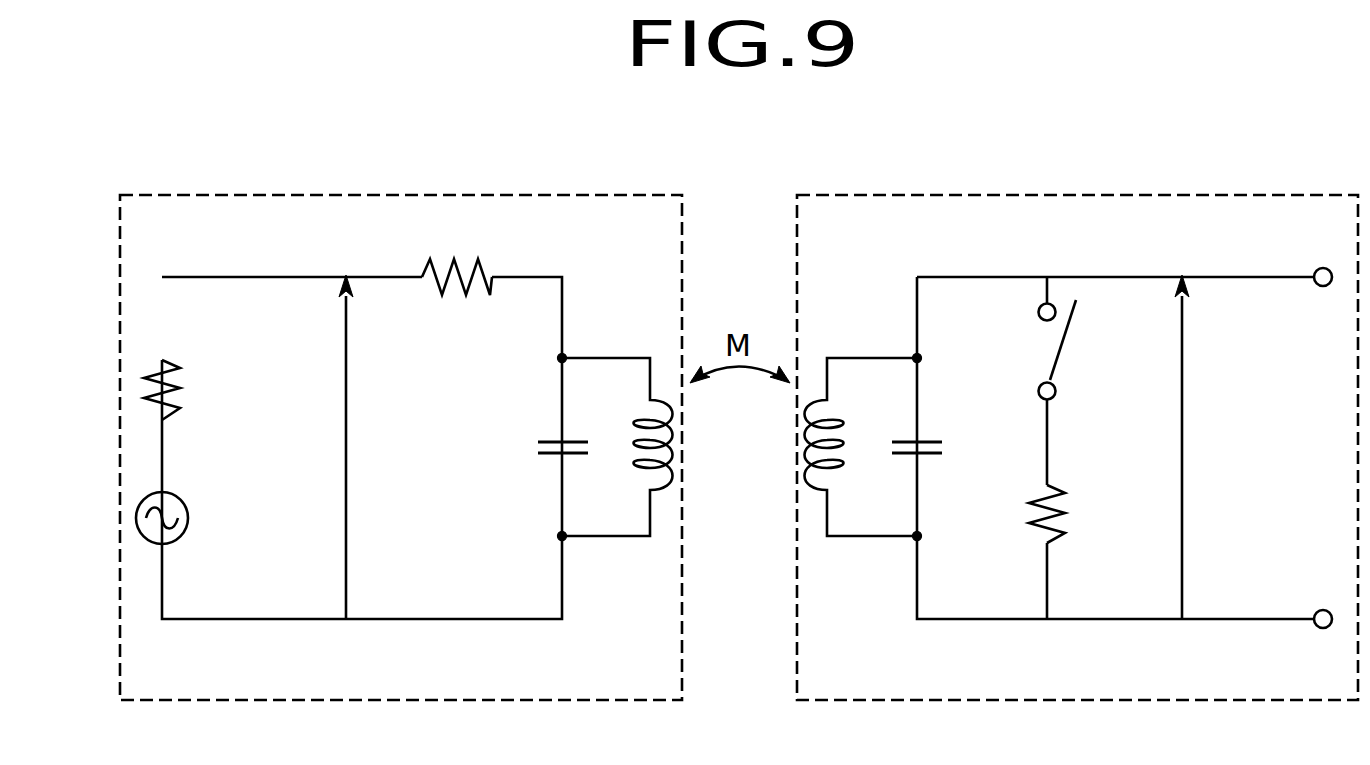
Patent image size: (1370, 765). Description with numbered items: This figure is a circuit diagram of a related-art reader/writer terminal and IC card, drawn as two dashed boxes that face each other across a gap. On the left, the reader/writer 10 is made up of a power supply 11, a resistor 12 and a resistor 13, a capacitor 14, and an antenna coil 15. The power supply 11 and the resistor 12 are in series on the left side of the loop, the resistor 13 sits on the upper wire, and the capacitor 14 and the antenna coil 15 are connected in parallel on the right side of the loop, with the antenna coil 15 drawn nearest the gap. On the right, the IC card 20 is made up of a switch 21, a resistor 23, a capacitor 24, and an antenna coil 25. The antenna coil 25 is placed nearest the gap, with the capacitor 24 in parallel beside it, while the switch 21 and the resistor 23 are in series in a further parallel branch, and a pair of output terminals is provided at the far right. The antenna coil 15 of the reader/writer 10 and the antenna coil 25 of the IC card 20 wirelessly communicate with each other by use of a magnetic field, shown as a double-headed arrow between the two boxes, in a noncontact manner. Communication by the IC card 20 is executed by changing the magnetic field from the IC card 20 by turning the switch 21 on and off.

The reader/writer 10 is at (402, 192).
The power supply 11 is at (186, 495).
The resistor 12 is at (185, 374).
The resistor 13 is at (449, 290).
The capacitor 14 is at (538, 443).
The antenna coil 15 is at (648, 482).
The IC card 20 is at (1080, 192).
The switch 21 is at (1046, 350).
The resistor 23 is at (1060, 516).
The capacitor 24 is at (944, 448).
The antenna coil 25 is at (826, 483).